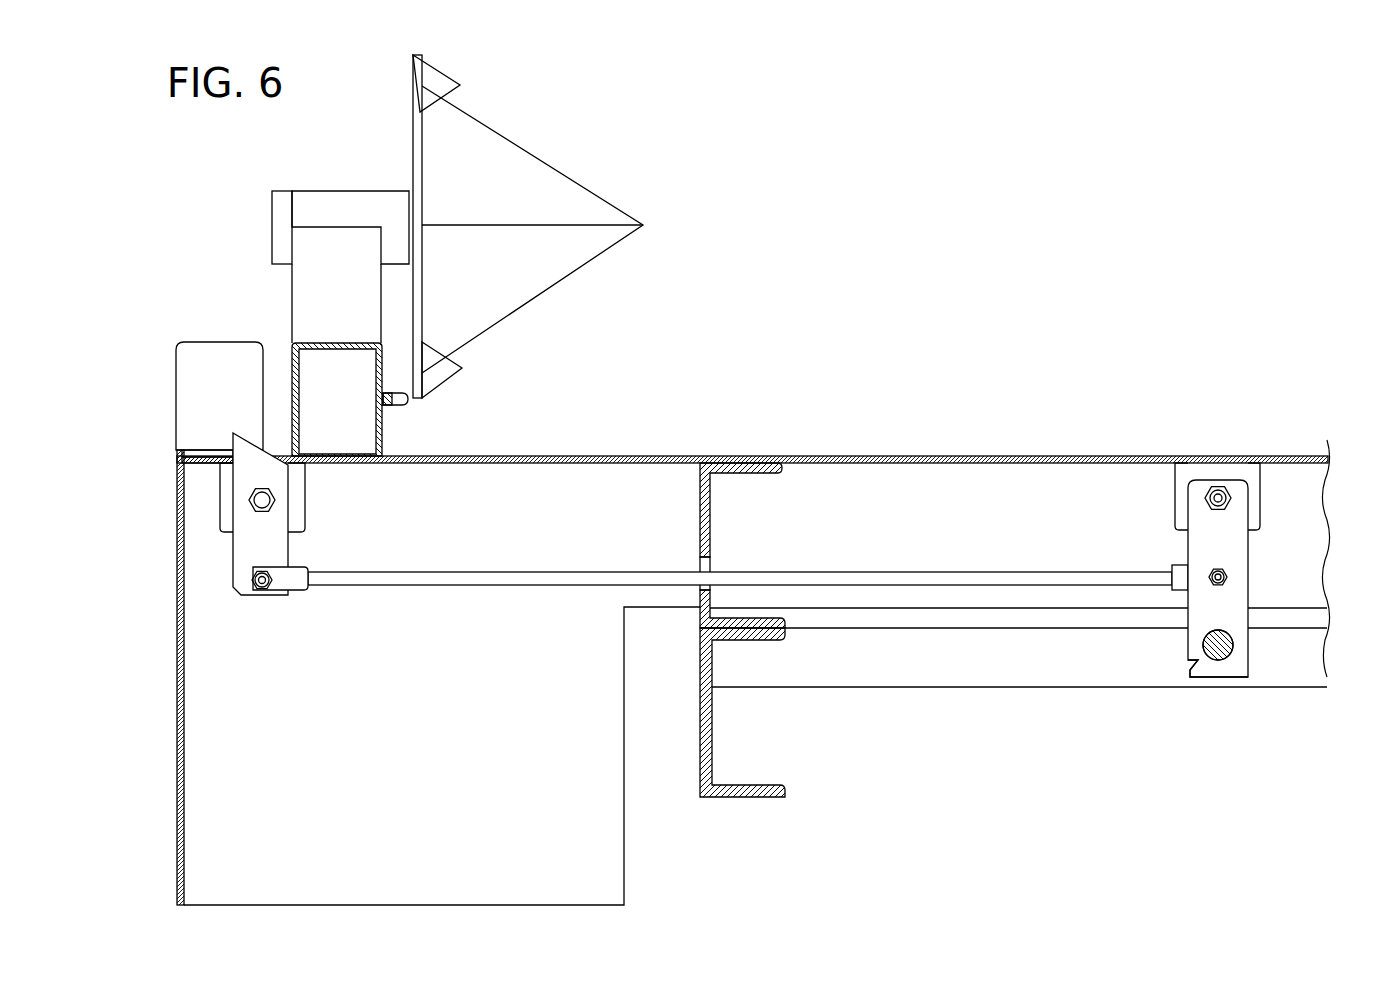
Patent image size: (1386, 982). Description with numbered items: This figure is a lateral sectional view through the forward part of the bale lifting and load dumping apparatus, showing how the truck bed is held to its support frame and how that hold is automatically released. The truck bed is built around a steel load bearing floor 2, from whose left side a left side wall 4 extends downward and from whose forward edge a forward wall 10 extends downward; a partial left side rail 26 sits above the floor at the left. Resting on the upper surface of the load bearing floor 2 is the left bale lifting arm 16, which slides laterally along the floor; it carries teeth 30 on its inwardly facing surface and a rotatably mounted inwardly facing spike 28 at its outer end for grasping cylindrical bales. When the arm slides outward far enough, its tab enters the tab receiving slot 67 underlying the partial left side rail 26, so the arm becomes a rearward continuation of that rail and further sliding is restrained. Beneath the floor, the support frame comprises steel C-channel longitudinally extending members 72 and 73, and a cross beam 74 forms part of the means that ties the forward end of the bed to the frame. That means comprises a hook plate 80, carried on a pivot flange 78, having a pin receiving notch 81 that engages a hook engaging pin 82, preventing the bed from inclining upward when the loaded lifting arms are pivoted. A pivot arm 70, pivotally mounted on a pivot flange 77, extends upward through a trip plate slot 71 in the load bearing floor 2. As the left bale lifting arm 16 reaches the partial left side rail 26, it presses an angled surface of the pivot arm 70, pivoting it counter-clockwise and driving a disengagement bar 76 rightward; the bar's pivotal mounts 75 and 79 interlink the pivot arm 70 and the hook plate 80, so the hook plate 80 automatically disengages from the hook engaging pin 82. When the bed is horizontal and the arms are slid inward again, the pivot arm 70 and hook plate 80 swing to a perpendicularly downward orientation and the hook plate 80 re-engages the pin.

The load bearing floor 2 is at (940, 455).
The left side wall 4 is at (177, 825).
The forward wall 10 is at (578, 860).
The left bale lifting arm 16 is at (292, 365).
The partial left side rail 26 is at (198, 368).
The inwardly facing spike 28 is at (490, 162).
The teeth 30 is at (410, 402).
The tab receiving slot 67 is at (182, 452).
The pivot arm 70 is at (250, 550).
The trip plate slot 71 is at (213, 462).
The C-channel longitudinally extending member 72 is at (713, 525).
The C-channel longitudinally extending member 73 is at (713, 700).
The cross beam 74 is at (938, 657).
The pivotal mount 75 is at (298, 587).
The disengagement bar 76 is at (992, 578).
The pivot flange 77 is at (227, 513).
The pivot flange 78 is at (1185, 482).
The pivotal mount 79 is at (1178, 587).
The hook plate 80 is at (1232, 542).
The pin receiving notch 81 is at (1193, 643).
The hook engaging pin 82 is at (1233, 650).